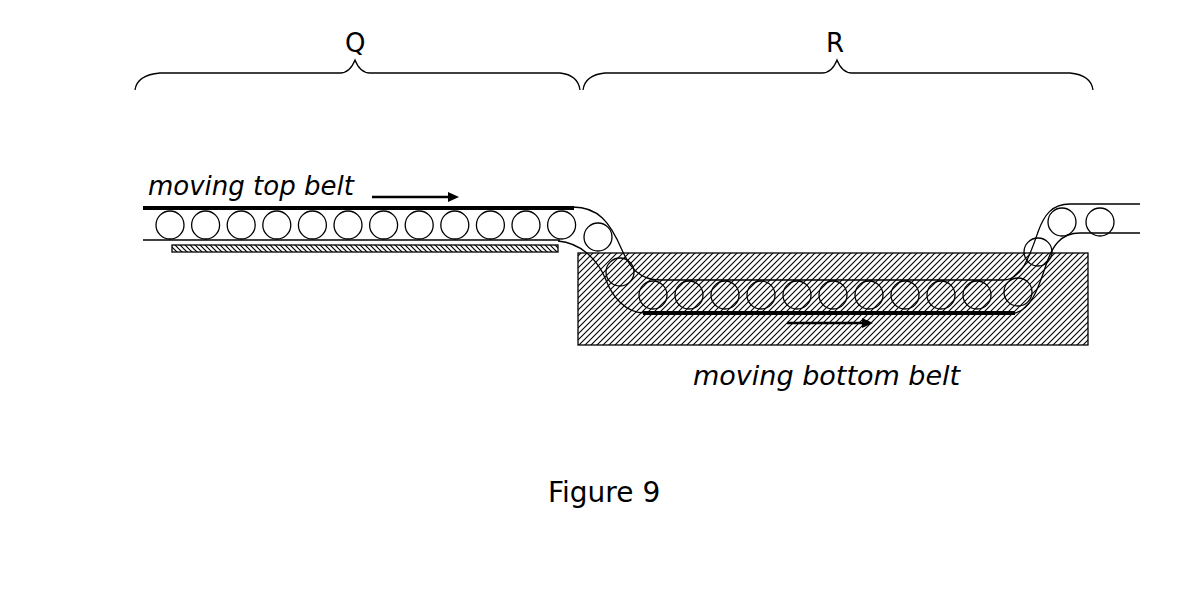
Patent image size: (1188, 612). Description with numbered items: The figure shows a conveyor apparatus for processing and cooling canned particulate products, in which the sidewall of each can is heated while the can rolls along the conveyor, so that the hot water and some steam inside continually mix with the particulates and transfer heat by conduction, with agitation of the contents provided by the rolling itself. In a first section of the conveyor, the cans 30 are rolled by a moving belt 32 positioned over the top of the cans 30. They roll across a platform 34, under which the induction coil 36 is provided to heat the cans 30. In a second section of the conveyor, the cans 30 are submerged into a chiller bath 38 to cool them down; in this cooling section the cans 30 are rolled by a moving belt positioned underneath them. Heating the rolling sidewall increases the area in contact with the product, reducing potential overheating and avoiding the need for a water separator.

The cans 30 is at (210, 228).
The moving belt 32 is at (506, 207).
The platform 34 is at (333, 240).
The induction coil 36 is at (457, 252).
The chiller bath 38 is at (812, 264).